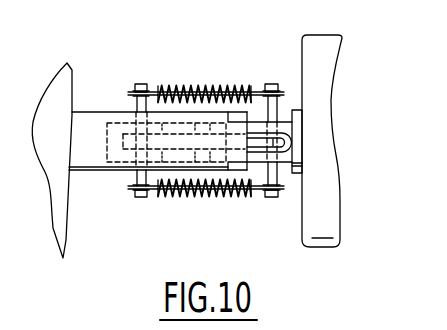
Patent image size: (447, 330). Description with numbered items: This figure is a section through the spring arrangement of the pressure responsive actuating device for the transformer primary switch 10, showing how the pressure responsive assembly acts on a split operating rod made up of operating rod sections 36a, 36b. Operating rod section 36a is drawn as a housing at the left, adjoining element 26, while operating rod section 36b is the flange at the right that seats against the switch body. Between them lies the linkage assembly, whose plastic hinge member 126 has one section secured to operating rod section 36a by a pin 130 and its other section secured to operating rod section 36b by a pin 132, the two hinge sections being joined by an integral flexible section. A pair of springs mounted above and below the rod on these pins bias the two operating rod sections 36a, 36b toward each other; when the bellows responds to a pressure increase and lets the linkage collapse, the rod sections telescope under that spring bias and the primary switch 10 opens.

The transformer primary switch 10 is at (68, 242).
The cowl 26 is at (72, 66).
The operating rod section 36a is at (96, 111).
The operating rod section 36b is at (293, 110).
The plastic hinge member 126 is at (283, 142).
The pin 130 is at (140, 198).
The pin 132 is at (272, 201).